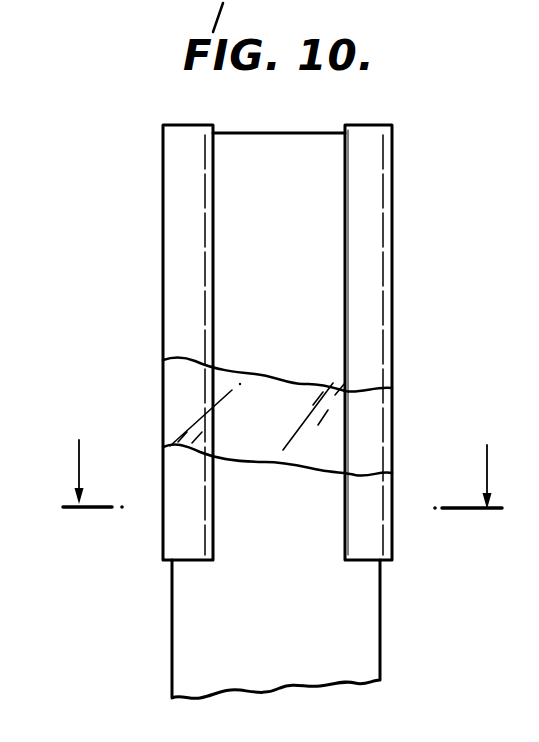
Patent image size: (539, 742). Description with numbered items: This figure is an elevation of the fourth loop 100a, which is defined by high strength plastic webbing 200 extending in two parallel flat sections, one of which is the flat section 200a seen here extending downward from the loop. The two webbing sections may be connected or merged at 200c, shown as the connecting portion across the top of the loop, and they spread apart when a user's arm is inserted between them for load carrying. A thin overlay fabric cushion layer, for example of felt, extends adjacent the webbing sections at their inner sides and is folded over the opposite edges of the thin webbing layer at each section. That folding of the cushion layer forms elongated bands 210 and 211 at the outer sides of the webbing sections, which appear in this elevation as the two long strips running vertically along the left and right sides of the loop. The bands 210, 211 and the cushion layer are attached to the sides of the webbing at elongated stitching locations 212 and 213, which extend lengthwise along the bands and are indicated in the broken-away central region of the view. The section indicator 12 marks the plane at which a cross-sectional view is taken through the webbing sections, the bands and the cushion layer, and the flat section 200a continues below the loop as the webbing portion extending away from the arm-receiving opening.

The fourth loop 100a is at (269, 387).
The flat section of webbing 200a is at (276, 629).
The merging portion of webbing sections 200c is at (320, 133).
The high strength plastic webbing 200 is at (306, 397).
The elongated band 210 is at (178, 262).
The elongated band 211 is at (378, 234).
The elongated stitching location 212 is at (182, 395).
The elongated stitching location 213 is at (347, 418).
The section line 12- 12 is at (282, 496).